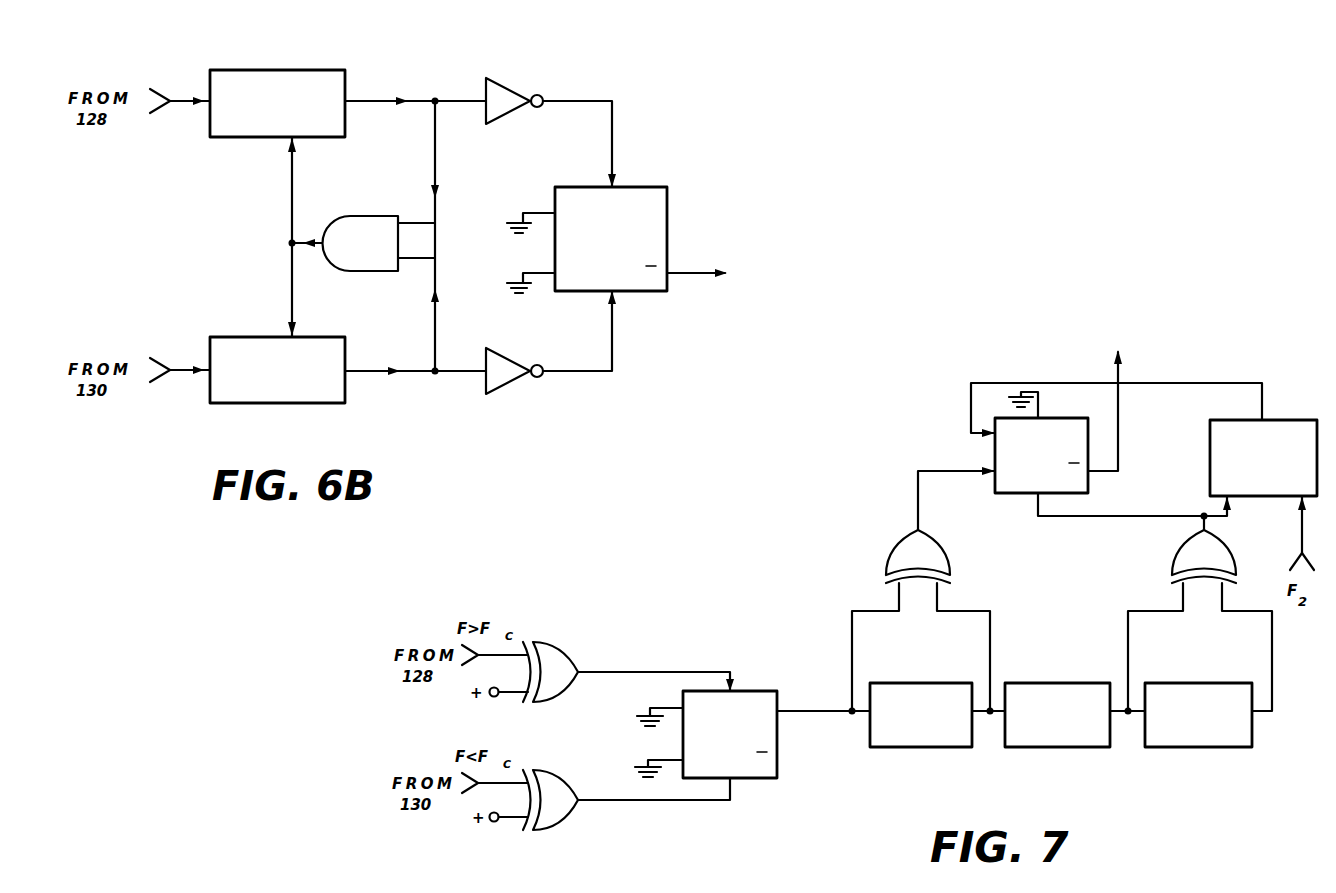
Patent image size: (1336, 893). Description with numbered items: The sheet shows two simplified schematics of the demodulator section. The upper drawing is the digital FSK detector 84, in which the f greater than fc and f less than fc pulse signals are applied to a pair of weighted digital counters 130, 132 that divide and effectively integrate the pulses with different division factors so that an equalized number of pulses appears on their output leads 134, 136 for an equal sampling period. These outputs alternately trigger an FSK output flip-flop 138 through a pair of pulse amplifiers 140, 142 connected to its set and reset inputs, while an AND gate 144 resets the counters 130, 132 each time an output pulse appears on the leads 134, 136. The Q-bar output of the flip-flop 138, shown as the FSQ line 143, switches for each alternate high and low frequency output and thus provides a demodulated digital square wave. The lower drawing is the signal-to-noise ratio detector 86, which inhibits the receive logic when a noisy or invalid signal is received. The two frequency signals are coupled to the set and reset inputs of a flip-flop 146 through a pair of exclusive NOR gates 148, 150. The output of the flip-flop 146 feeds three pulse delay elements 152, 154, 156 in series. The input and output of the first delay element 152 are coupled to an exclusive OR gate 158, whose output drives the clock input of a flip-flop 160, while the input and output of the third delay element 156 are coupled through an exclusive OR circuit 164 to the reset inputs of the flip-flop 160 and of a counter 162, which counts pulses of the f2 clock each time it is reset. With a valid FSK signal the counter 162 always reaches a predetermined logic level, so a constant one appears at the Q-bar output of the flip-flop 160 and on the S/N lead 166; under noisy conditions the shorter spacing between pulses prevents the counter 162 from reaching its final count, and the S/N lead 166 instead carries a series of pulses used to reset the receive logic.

In FIG. 6B, the digital FSK detector 84 is at (624, 82).
In FIG. 7, the signal-to-noise ratio detector 86 is at (822, 558).
In FIG. 6B, the counter 130 is at (296, 68).
In FIG. 6B, the counter 132 is at (224, 334).
In FIG. 6B, the lead 134 is at (371, 97).
In FIG. 6B, the lead 136 is at (371, 378).
In FIG. 6B, the FSK output flip-flop 138 is at (642, 186).
In FIG. 6B, the pulse amplifier 140 is at (507, 81).
In FIG. 6B, the pulse amplifier 142 is at (506, 383).
In FIG. 6B, the FSQ output line 143 is at (697, 275).
In FIG. 6B, the AND gate 144 is at (372, 272).
In FIG. 7, the flip-flop 146 is at (752, 688).
In FIG. 7, the exclusive NOR gate 148 is at (566, 646).
In FIG. 7, the exclusive NOR gate 150 is at (562, 826).
In FIG. 7, the first delay element 152 is at (912, 683).
In FIG. 7, the second delay element 154 is at (1042, 683).
In FIG. 7, the third delay element 156 is at (1182, 683).
In FIG. 7, the exclusive OR gate 158 is at (928, 533).
In FIG. 7, the flip-flop 160 is at (1010, 498).
In FIG. 7, the counter 162 is at (1278, 417).
In FIG. 7, the exclusive OR circuit 164 is at (1233, 557).
In FIG. 7, the S/N lead 166 is at (1120, 441).